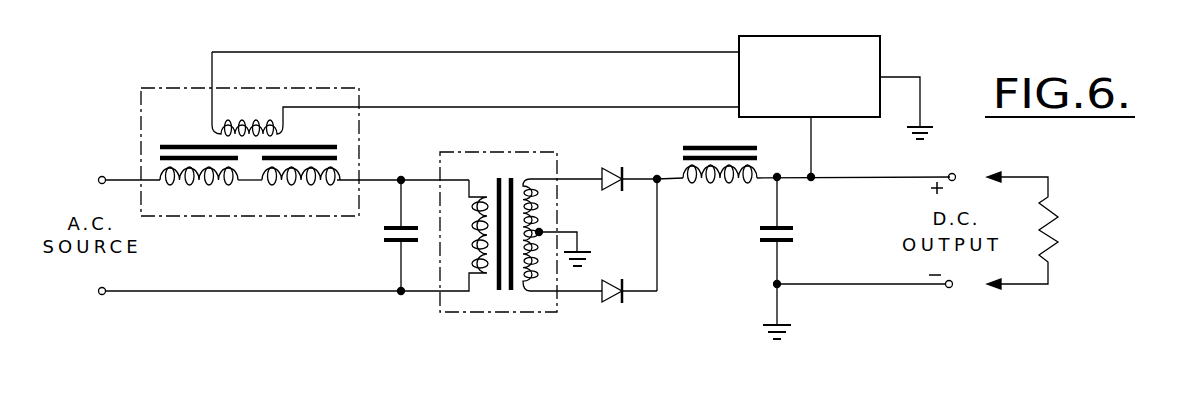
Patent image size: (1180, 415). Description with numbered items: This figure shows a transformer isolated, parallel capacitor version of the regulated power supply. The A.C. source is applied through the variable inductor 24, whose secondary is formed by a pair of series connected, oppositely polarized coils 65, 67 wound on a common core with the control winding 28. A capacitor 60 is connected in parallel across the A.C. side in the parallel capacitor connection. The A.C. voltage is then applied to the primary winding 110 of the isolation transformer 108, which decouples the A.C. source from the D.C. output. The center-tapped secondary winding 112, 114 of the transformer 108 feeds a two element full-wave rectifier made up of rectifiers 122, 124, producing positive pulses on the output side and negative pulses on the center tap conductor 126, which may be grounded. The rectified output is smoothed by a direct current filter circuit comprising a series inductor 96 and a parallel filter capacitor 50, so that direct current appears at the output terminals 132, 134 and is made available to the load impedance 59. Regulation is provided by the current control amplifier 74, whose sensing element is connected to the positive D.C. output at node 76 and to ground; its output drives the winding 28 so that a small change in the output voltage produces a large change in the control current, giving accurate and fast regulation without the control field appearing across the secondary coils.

The variable inductor 24 is at (178, 88).
The winding 28 is at (212, 130).
The coil 65 is at (217, 183).
The coil 67 is at (305, 183).
The capacitor 60 is at (384, 238).
The isolation transformer 108 is at (524, 234).
The primary winding 110 is at (487, 197).
The secondary winding 112 is at (540, 200).
The secondary winding 114 is at (528, 290).
The conductor 126 is at (580, 250).
The rectifier 122 is at (609, 168).
The rectifier 124 is at (606, 300).
The series inductor 96 is at (723, 184).
The filter capacitor 50 is at (797, 236).
The current control amplifier 74 is at (883, 53).
The node 76 is at (818, 174).
The terminal 132 is at (958, 173).
The terminal 134 is at (948, 290).
The load impedance 59 is at (1060, 232).